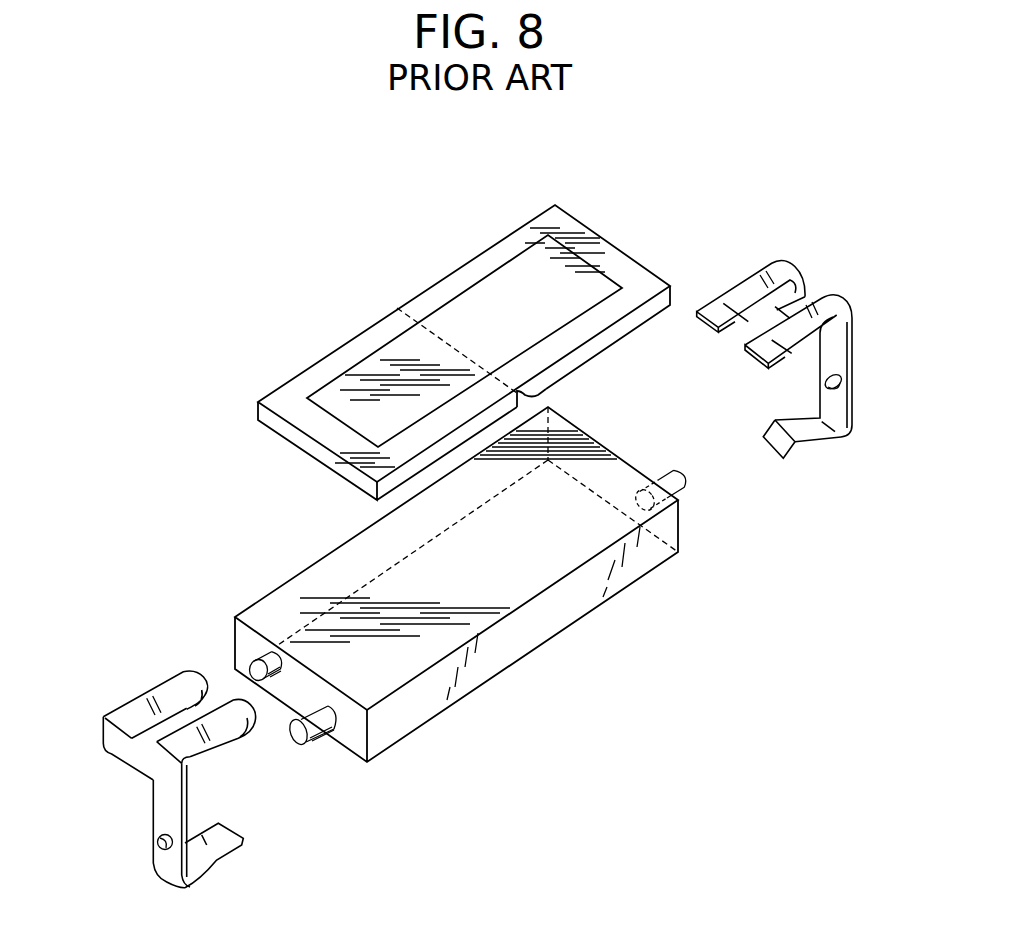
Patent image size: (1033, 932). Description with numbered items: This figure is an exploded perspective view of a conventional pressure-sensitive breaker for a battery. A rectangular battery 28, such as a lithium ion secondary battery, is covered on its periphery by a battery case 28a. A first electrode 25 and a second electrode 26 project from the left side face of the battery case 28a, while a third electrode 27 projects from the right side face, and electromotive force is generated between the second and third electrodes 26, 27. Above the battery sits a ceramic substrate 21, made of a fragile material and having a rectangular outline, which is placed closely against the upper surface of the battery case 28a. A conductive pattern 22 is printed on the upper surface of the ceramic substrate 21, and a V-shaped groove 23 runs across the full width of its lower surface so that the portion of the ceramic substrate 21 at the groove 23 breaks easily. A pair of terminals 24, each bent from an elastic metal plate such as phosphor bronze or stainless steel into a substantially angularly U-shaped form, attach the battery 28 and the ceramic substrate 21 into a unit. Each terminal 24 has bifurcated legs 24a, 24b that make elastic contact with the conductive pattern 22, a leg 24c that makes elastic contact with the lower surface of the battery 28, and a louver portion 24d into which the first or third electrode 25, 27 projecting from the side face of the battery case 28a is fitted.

The ceramic substrate 21 is at (373, 323).
The conductive pattern 22 is at (515, 283).
The V-shaped groove 23 is at (535, 401).
The terminal 24 is at (855, 343).
The leg 24a is at (752, 300).
The leg 24b is at (817, 310).
The leg 24c is at (810, 433).
The louver portion 24d is at (837, 387).
The first electrode 25 is at (310, 748).
The second electrode 26 is at (265, 684).
The third electrode 27 is at (680, 471).
The battery 28 is at (538, 655).
The battery case 28a is at (593, 602).